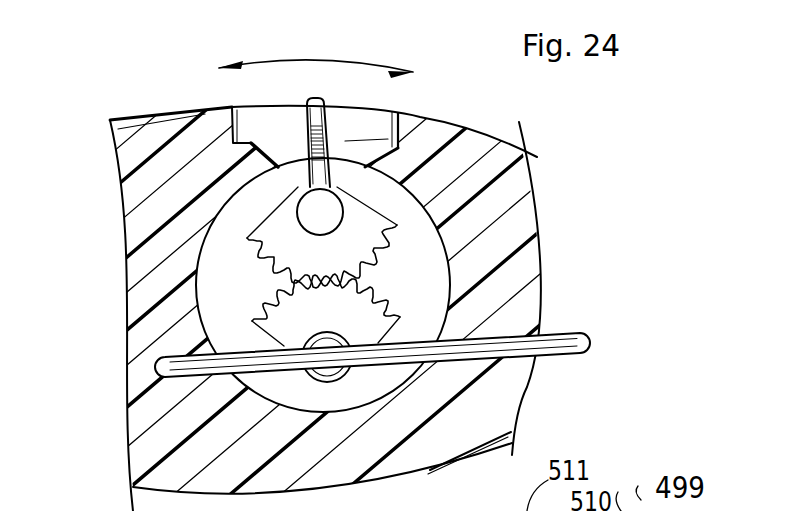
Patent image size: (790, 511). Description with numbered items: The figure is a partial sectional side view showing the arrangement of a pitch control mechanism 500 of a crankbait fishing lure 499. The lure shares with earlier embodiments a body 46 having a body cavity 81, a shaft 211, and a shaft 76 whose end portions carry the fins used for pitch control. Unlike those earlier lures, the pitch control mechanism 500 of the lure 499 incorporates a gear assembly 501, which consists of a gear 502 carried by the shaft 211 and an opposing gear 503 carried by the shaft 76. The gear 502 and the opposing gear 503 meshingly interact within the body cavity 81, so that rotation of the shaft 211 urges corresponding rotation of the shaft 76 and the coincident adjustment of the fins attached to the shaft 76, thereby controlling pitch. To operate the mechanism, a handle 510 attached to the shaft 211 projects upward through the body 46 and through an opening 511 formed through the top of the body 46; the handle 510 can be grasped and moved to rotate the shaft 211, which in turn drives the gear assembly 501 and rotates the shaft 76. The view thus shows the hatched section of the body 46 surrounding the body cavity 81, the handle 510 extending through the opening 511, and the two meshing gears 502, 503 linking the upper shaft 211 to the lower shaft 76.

The body 46 is at (507, 395).
The body cavity 81 is at (233, 288).
The opening 511 is at (365, 129).
The handle 510 is at (333, 108).
The gear 502 is at (398, 220).
The shaft 211 is at (313, 208).
The opposing gear 503 is at (400, 319).
The gear assembly 501 is at (400, 268).
The shaft 76 is at (258, 322).
The pitch control mechanism 500 is at (279, 133).
The crankbait fishing lure 499 is at (551, 118).